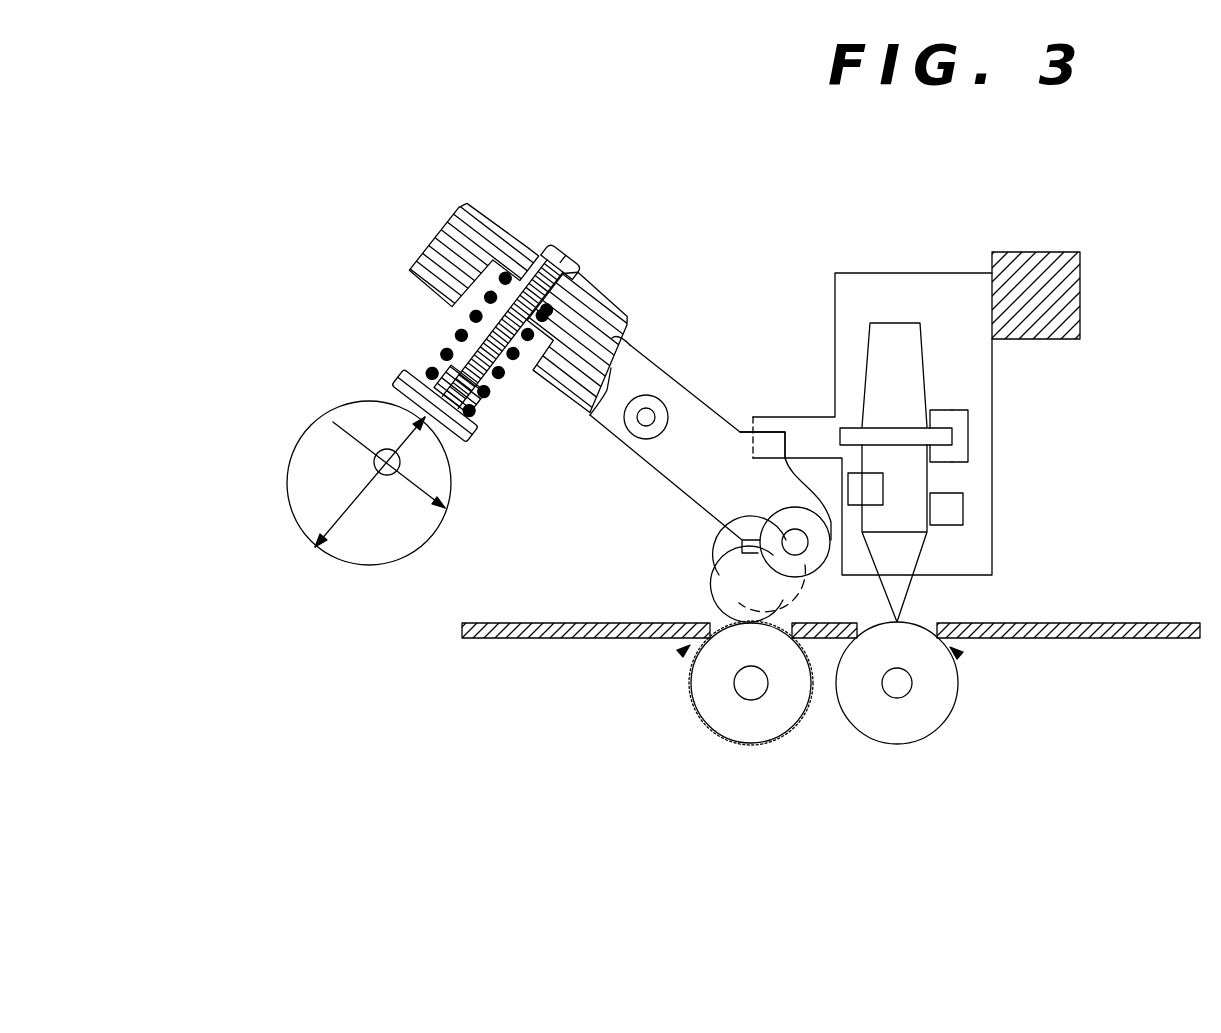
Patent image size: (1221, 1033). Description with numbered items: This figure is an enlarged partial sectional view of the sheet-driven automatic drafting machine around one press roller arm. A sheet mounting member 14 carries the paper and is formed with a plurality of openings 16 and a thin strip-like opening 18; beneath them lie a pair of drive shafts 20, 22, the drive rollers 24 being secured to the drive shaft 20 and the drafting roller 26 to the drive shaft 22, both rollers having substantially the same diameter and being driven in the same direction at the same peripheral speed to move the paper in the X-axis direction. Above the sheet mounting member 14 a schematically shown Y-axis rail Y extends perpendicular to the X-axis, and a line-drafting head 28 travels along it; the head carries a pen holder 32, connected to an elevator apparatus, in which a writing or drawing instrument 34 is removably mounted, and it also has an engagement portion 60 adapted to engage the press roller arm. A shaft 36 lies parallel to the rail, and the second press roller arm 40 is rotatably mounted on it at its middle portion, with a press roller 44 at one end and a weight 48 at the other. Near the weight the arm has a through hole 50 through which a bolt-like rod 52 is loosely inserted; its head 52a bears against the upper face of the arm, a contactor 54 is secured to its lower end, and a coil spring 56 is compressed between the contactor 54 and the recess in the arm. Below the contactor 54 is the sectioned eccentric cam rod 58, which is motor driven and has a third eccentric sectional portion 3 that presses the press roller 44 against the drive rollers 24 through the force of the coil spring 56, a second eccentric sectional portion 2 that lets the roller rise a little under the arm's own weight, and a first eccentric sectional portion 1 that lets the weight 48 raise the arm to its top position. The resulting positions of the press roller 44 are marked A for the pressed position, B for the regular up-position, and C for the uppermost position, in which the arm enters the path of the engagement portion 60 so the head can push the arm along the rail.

The sheet mounting member 14 is at (1078, 640).
The openings 16 is at (686, 648).
The strip-like opening 18 is at (955, 650).
The drive shaft 20 is at (751, 692).
The drive shaft 22 is at (888, 688).
The drive rollers 24 is at (703, 723).
The drafting roller 26 is at (912, 730).
The line-drafting head 28 is at (980, 358).
The pen holder 32 is at (970, 432).
The writing or drawing instrument 34 is at (918, 505).
The shaft 36 is at (646, 417).
The second press roller arm 40 is at (627, 333).
The press roller 44 is at (784, 517).
The weight 48 is at (466, 200).
The through hole 50 is at (533, 246).
The bolt-like rod 52 is at (437, 355).
The head 52a is at (575, 258).
The contactor 54 is at (405, 378).
The coil spring 56 is at (473, 318).
The eccentric cam rod 58 is at (303, 493).
The engagement portion 60 is at (806, 427).
The Y-axis rail Y is at (1080, 272).
The position A is at (713, 600).
The position B is at (737, 577).
The position C is at (713, 514).
The first eccentric sectional portion 1 is at (423, 418).
The second eccentric sectional portion 2 is at (445, 508).
The third eccentric sectional portion 3 is at (315, 547).